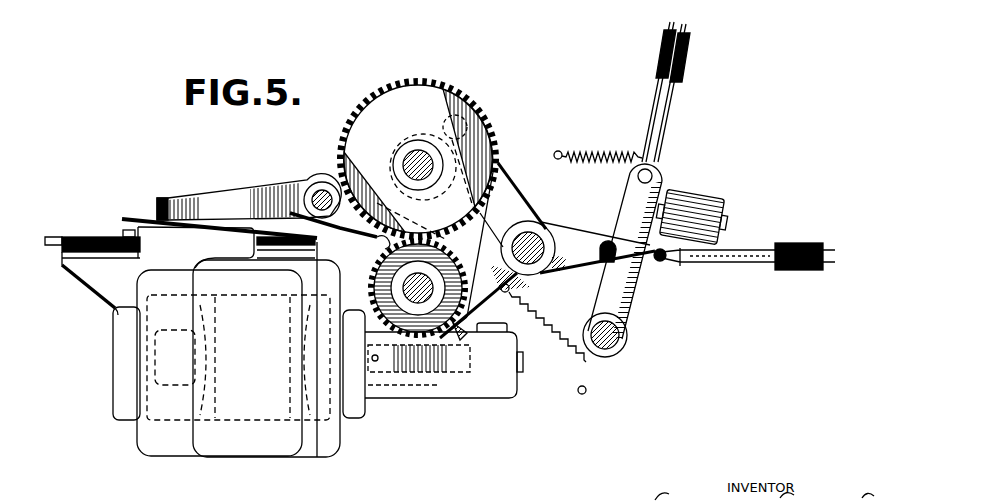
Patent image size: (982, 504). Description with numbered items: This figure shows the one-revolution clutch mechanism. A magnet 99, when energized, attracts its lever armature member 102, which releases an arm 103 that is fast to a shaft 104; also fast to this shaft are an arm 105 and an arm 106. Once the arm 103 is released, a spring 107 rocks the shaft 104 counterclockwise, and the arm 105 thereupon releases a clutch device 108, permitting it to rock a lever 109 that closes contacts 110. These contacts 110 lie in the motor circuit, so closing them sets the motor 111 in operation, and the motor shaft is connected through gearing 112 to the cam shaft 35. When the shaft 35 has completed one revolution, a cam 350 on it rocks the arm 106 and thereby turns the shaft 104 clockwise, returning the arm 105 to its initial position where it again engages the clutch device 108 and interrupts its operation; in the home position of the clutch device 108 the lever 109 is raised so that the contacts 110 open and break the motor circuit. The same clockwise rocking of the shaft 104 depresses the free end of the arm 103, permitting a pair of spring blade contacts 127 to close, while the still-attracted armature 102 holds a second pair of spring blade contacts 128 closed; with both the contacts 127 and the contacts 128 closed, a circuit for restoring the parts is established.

The cam shaft 35 is at (418, 160).
The cam 350 is at (425, 177).
The magnet 99 is at (700, 207).
The lever armature member 102 is at (633, 205).
The arm 103 is at (562, 240).
The shaft 104 is at (529, 238).
The arm 105 is at (522, 285).
The arm 106 is at (507, 172).
The spring 107 is at (550, 357).
The clutch device 108 is at (457, 340).
The lever 109 is at (268, 195).
The contacts 110 is at (122, 218).
The motor 111 is at (260, 418).
The gearing 112 is at (376, 257).
The spring blade contacts 127 is at (700, 258).
The spring blade contacts 128 is at (662, 153).